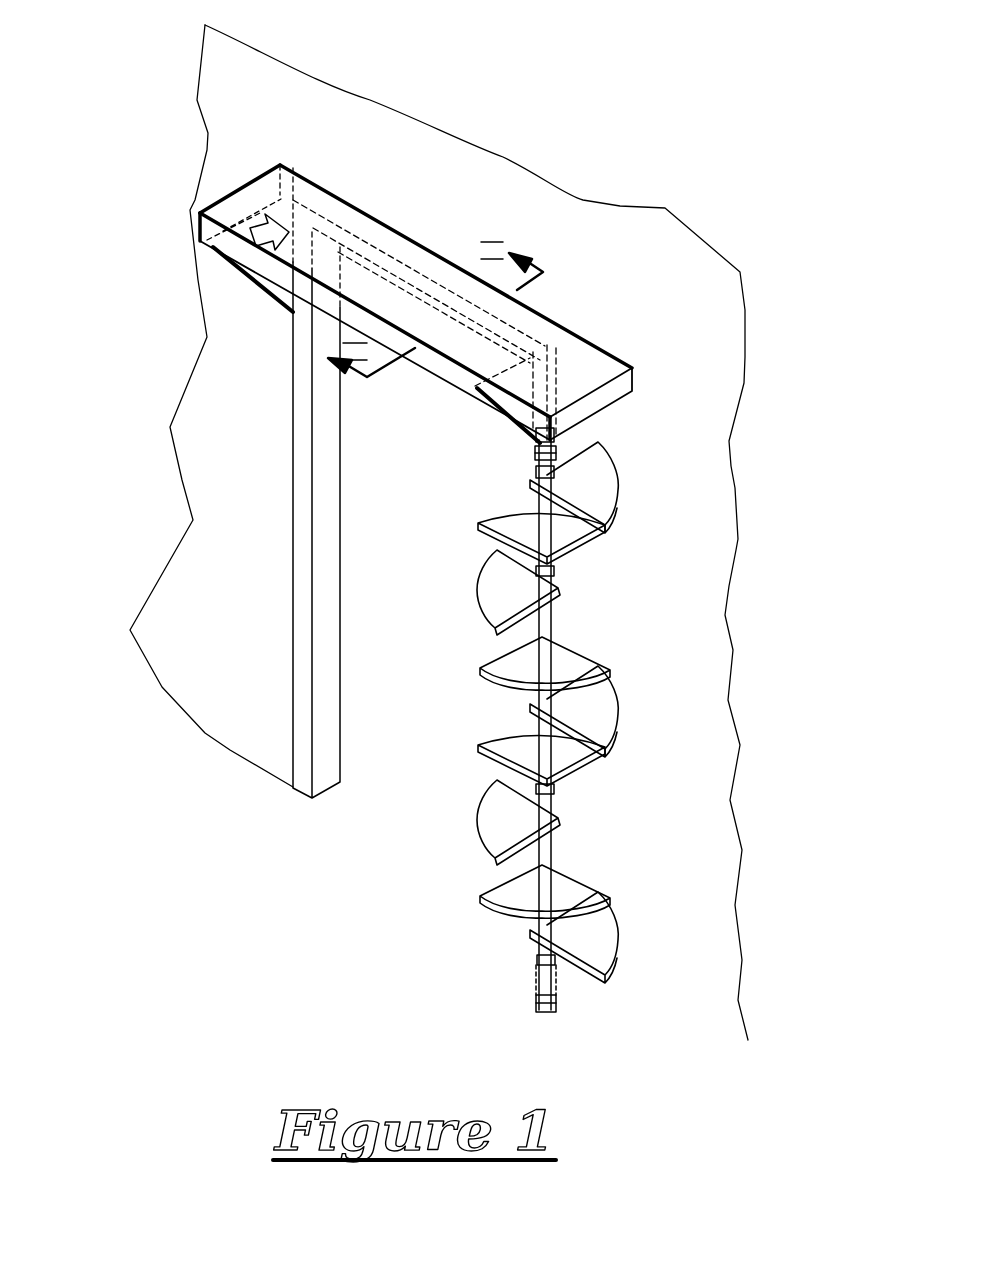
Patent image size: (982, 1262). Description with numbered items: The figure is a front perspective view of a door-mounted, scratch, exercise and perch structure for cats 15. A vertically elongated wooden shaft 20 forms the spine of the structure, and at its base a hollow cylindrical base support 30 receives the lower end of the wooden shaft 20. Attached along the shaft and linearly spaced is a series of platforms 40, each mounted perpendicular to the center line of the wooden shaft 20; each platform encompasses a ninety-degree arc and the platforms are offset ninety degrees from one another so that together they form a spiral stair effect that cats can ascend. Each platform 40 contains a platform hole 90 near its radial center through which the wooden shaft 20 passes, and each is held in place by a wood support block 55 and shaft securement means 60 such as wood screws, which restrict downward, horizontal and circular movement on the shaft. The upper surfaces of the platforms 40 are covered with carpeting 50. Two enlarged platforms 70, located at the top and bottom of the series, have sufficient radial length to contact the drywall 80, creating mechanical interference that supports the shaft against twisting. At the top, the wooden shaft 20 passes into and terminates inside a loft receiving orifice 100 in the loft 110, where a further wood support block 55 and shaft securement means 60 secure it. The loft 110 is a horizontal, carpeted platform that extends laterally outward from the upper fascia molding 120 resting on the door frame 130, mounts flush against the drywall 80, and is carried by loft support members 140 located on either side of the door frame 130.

The door-mounted, scratch, exercise and perch structure for cats 15 is at (722, 162).
The wooden shaft 20 is at (532, 864).
The base support 30 is at (537, 998).
The platforms 40 is at (477, 577).
The carpeting 50 is at (363, 284).
The wood support block 55 is at (525, 448).
The shaft securement means 60 is at (556, 442).
The enlarged platforms 70 is at (619, 480).
The drywall 80 is at (495, 187).
The platform hole 90 is at (603, 567).
The loft receiving orifice 100 is at (554, 430).
The loft 110 is at (290, 222).
The upper fascia molding 120 is at (338, 225).
The door frame 130 is at (327, 718).
The loft support members 140 is at (252, 283).